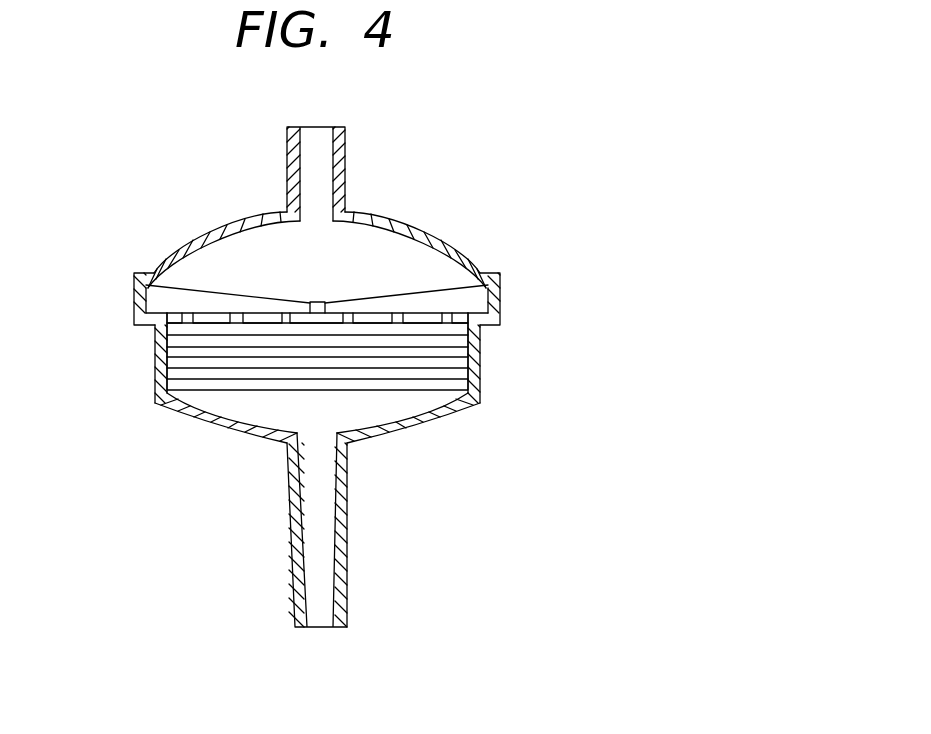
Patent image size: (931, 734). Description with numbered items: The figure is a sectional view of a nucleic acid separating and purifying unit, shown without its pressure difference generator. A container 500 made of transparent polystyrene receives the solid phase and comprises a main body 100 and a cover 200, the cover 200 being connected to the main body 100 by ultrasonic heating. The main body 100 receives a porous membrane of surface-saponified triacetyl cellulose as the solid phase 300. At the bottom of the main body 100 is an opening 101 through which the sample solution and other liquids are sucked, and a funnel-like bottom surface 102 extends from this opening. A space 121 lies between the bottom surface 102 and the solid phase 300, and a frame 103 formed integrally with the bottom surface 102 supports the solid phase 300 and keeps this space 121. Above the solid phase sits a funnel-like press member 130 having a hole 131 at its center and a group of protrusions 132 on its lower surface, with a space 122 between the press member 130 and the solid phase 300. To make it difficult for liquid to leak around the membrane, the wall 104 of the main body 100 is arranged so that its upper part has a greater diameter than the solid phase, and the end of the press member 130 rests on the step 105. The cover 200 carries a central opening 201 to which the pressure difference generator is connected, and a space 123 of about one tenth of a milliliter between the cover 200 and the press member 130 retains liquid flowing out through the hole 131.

The container 500 is at (407, 117).
The main body 100 is at (155, 358).
The opening 101 is at (318, 628).
The bottom surface 102 is at (418, 434).
The frame 103 is at (158, 405).
The wall 104 is at (480, 366).
The step 105 is at (498, 302).
The space 121 is at (364, 420).
The space 122 is at (391, 298).
The space 123 is at (365, 252).
The press member 130 is at (470, 263).
The hole 131 is at (317, 302).
The protrusions 132 is at (498, 324).
The cover 200 is at (175, 250).
The inlet port 201 is at (313, 127).
The solid phase 300 is at (383, 353).